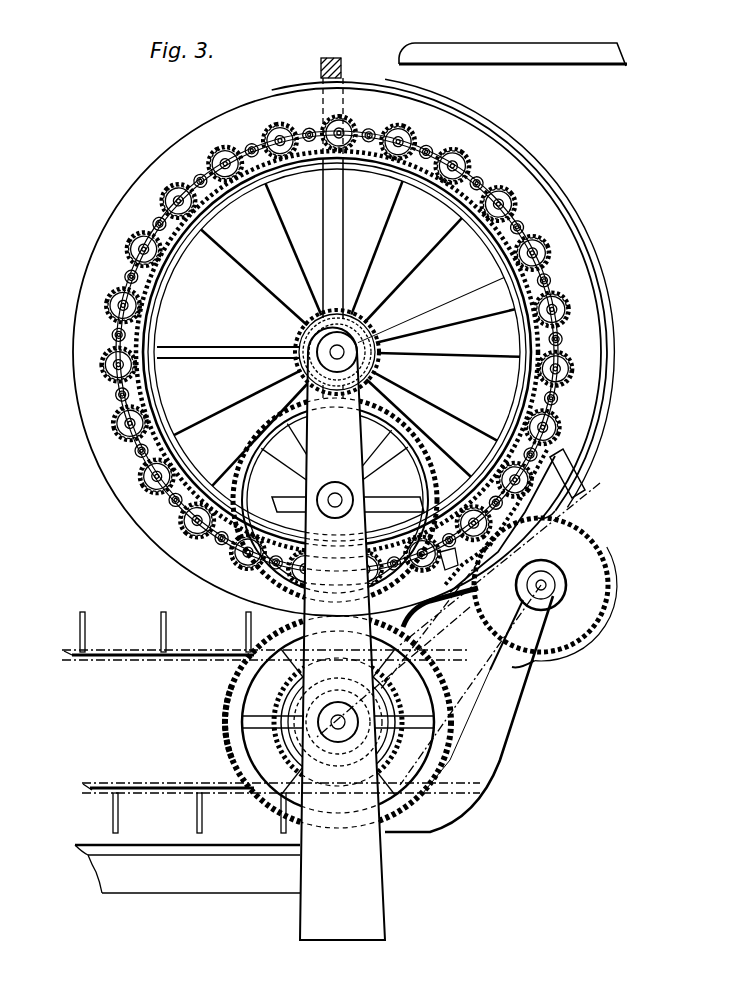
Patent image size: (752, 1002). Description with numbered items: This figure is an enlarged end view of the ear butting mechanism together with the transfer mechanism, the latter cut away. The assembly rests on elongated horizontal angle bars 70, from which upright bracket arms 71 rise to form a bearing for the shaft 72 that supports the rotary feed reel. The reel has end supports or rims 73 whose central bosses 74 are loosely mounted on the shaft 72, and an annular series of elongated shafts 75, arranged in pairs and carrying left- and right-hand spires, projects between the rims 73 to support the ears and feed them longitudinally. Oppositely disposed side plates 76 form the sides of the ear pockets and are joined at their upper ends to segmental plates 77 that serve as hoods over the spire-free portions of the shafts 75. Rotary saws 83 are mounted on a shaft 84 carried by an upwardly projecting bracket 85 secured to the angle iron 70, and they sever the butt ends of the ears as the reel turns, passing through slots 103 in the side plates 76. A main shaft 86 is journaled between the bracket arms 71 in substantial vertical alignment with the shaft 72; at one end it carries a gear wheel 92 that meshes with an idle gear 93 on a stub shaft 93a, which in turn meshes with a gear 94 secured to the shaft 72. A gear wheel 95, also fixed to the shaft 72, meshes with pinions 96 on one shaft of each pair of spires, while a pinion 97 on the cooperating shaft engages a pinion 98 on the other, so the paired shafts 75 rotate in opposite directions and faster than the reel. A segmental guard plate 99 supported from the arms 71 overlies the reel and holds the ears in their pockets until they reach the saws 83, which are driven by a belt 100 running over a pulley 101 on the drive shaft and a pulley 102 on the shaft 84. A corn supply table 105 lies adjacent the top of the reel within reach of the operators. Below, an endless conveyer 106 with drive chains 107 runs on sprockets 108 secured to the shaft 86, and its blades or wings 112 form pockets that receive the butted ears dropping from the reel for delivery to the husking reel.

The angle bars 70 is at (196, 888).
The upright bracket arms 71 is at (352, 481).
The shaft 72 is at (318, 357).
The end supports or rims 73 is at (75, 410).
The central bosses 74 is at (296, 347).
The elongated shafts 75 is at (268, 148).
The side plates 76 is at (584, 455).
The segmental plates 77 is at (578, 509).
The rotary saws 83 is at (598, 583).
The shaft 84 is at (551, 590).
The bracket 85 is at (496, 726).
The main shaft 86 is at (338, 716).
The gear wheel 92 is at (446, 704).
The idle gear 93 is at (428, 468).
The stub shaft 93a is at (328, 500).
The gear 94 is at (348, 326).
The gear wheel 95 is at (508, 272).
The pinions 96 is at (126, 250).
The pinion 97 is at (436, 146).
The pinion 98 is at (386, 138).
The guard plate 99 is at (276, 86).
The belt 100 is at (459, 612).
The pulley 101 is at (338, 722).
The pulley 102 is at (548, 575).
The slots 103 is at (572, 506).
The corn supply table 105 is at (489, 54).
The endless conveyer 106 is at (178, 661).
The drive chains 107 is at (86, 658).
The sprockets 108 is at (229, 745).
The blades or wings 112 is at (246, 632).